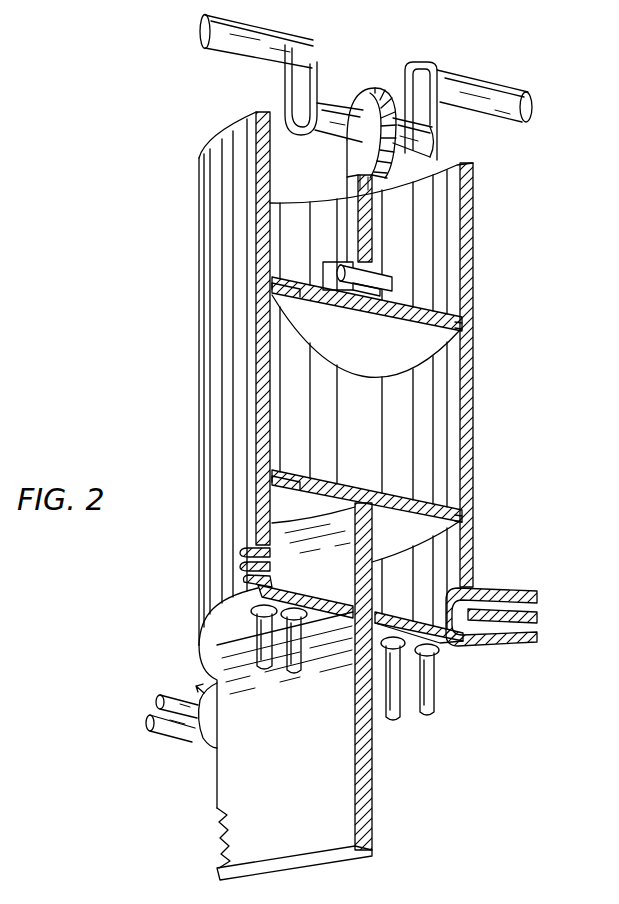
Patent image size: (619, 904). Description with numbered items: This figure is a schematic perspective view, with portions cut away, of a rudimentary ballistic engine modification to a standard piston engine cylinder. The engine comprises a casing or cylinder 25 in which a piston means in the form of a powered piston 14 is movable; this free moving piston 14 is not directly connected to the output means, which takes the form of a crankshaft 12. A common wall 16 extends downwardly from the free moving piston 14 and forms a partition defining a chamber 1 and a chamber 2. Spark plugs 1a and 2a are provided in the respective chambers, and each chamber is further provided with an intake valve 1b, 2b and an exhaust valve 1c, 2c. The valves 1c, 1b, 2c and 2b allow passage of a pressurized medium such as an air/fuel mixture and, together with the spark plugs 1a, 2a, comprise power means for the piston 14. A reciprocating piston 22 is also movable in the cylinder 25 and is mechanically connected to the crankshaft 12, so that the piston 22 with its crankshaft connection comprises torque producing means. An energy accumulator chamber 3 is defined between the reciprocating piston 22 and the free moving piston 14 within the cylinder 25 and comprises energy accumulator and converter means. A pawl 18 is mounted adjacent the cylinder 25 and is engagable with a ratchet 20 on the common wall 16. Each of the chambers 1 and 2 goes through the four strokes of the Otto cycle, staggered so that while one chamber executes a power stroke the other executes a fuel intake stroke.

The chamber 1 is at (265, 532).
The spark plug 1a is at (250, 580).
The intake valve 1b is at (298, 667).
The exhaust valve 1c is at (265, 670).
The chamber 2 is at (427, 573).
The spark plug 2a is at (533, 597).
The intake valve 2b is at (427, 695).
The exhaust valve 2c is at (397, 708).
The energy accumulator chamber 3 is at (413, 438).
The crankshaft 12 is at (497, 122).
The powered piston 14 is at (347, 480).
The common wall 16 is at (317, 691).
The pawl 18 is at (192, 747).
The ratchet 20 is at (217, 834).
The reciprocating piston 22 is at (437, 297).
The cylinder 25 is at (233, 210).